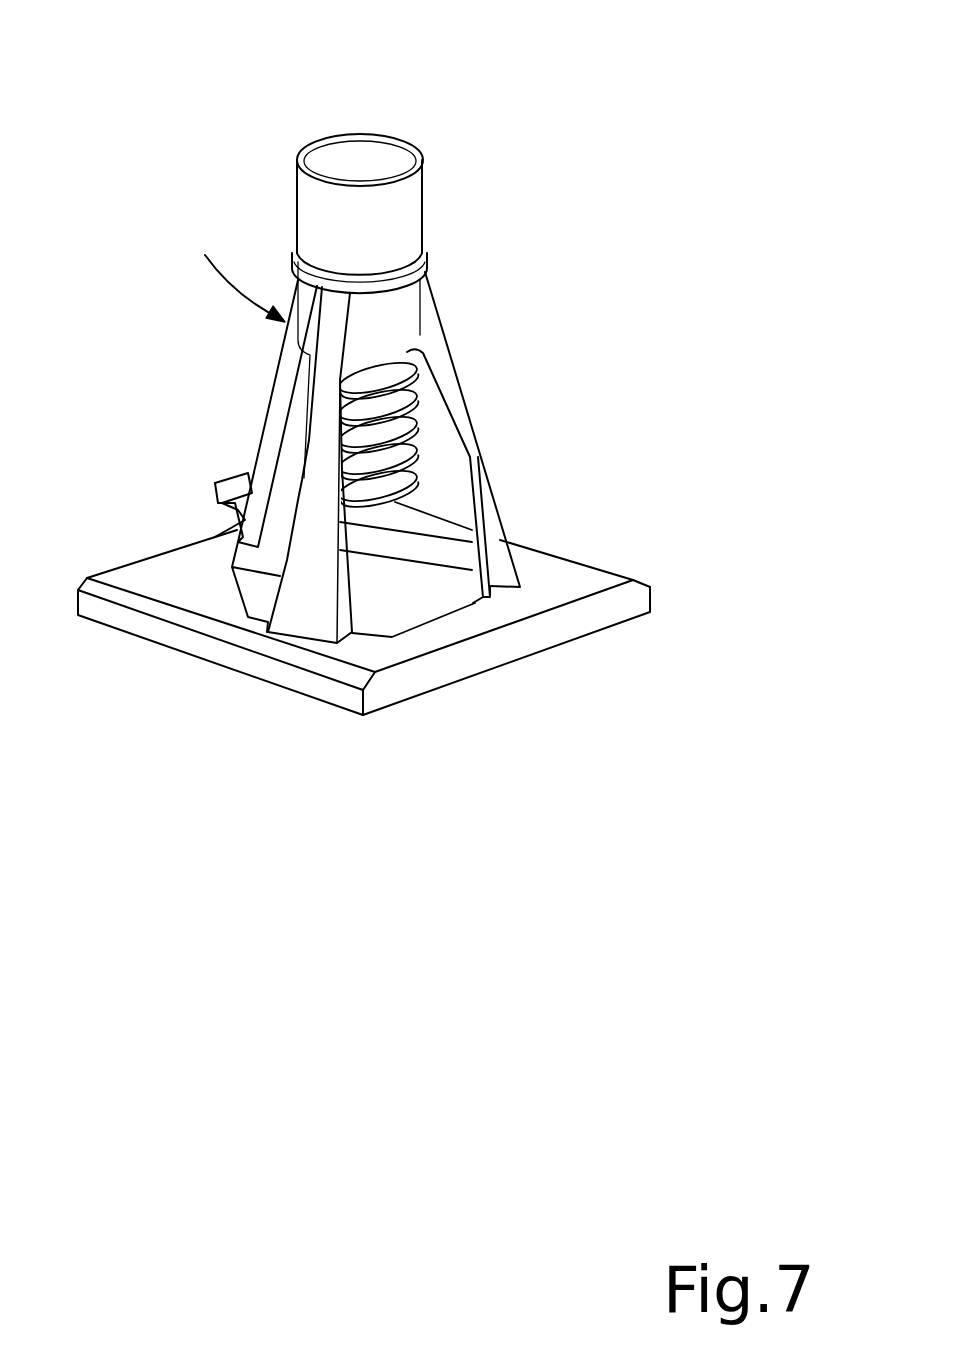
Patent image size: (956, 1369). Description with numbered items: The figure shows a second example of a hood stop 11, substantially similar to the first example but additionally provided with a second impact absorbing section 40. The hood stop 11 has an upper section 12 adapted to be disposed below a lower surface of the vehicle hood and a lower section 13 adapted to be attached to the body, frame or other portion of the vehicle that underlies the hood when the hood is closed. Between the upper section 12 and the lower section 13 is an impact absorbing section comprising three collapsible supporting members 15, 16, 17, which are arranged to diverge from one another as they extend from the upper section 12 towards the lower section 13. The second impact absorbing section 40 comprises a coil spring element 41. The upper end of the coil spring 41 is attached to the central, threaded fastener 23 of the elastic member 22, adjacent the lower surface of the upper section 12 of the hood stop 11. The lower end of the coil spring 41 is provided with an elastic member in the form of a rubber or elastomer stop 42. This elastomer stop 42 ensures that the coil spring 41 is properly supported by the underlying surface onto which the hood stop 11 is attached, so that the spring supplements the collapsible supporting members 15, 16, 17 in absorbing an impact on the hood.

The hood stop 11 is at (228, 113).
The upper section 12 is at (433, 293).
The lower section 13 is at (593, 583).
The collapsible supporting member 15 is at (497, 558).
The collapsible supporting member 16 is at (315, 600).
The collapsible supporting member 17 is at (255, 467).
The elastic member 22 is at (410, 213).
The central threaded fastener 23 is at (400, 343).
The second impact absorbing section 40 is at (562, 383).
The coil spring element 41 is at (342, 407).
The elastomer stop 42 is at (390, 497).